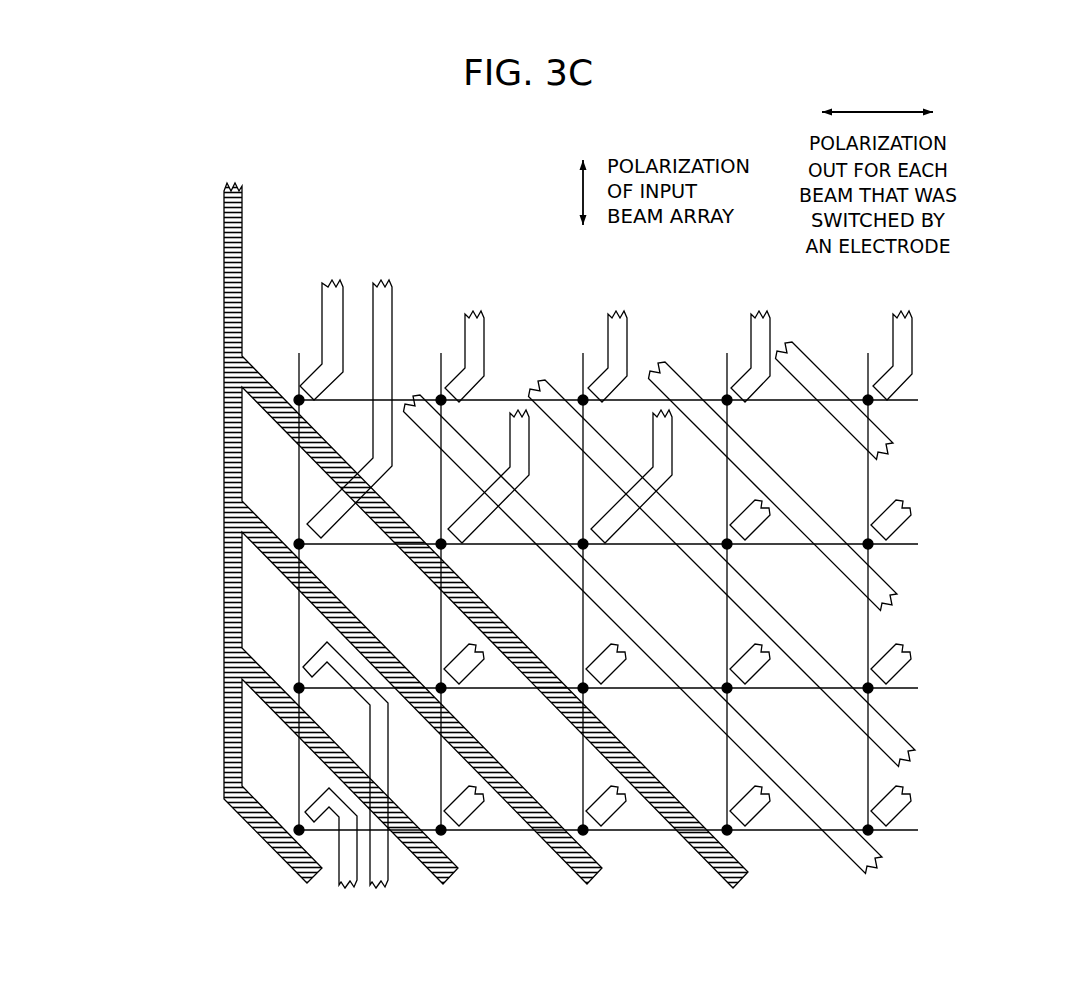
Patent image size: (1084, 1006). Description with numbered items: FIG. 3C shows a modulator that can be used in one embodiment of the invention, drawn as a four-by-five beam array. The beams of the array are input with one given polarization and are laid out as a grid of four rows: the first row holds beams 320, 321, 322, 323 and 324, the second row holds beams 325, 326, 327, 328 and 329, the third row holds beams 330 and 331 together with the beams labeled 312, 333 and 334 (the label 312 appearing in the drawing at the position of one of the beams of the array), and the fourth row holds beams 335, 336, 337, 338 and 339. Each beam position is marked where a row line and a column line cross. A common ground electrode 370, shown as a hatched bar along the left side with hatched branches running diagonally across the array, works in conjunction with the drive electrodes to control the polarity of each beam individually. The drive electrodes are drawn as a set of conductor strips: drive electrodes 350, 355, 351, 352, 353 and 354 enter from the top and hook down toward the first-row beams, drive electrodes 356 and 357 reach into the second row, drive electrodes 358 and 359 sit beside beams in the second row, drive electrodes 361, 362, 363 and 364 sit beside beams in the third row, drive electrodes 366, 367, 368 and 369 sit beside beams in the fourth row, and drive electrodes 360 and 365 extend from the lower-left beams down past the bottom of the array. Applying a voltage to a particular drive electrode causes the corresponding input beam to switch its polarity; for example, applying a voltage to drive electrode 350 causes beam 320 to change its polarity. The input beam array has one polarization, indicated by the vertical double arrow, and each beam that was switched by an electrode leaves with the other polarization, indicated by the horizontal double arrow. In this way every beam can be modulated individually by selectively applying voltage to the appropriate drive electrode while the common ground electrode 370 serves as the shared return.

The electrode node 312 is at (577, 681).
The beam 320 is at (293, 393).
The beam 321 is at (435, 393).
The beam 322 is at (577, 393).
The beam 323 is at (721, 393).
The beam 324 is at (862, 393).
The beam 325 is at (293, 537).
The beam 326 is at (435, 537).
The beam 327 is at (577, 537).
The beam 328 is at (721, 537).
The beam 329 is at (862, 537).
The beam 330 is at (293, 681).
The beam 331 is at (435, 681).
The beam 333 is at (721, 681).
The beam 334 is at (862, 681).
The beam 335 is at (293, 823).
The beam 336 is at (435, 823).
The beam 337 is at (577, 823).
The beam 338 is at (721, 823).
The beam 339 is at (862, 823).
The drive electrode 350 is at (321, 300).
The drive electrode 351 is at (488, 330).
The drive electrode 352 is at (631, 330).
The drive electrode 353 is at (774, 330).
The drive electrode 354 is at (916, 330).
The drive electrode 355 is at (396, 297).
The drive electrode 356 is at (507, 442).
The drive electrode 357 is at (650, 442).
The drive electrode 358 is at (759, 530).
The drive electrode 359 is at (900, 530).
The drive electrode 360 is at (380, 884).
The drive electrode 361 is at (473, 674).
The drive electrode 362 is at (615, 674).
The drive electrode 363 is at (759, 674).
The drive electrode 364 is at (900, 674).
The drive electrode 365 is at (335, 876).
The drive electrode 366 is at (474, 816).
The drive electrode 367 is at (616, 816).
The drive electrode 368 is at (760, 816).
The drive electrode 369 is at (901, 816).
The common ground electrode 370 is at (221, 400).